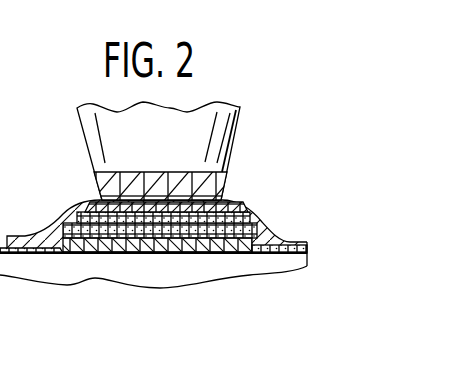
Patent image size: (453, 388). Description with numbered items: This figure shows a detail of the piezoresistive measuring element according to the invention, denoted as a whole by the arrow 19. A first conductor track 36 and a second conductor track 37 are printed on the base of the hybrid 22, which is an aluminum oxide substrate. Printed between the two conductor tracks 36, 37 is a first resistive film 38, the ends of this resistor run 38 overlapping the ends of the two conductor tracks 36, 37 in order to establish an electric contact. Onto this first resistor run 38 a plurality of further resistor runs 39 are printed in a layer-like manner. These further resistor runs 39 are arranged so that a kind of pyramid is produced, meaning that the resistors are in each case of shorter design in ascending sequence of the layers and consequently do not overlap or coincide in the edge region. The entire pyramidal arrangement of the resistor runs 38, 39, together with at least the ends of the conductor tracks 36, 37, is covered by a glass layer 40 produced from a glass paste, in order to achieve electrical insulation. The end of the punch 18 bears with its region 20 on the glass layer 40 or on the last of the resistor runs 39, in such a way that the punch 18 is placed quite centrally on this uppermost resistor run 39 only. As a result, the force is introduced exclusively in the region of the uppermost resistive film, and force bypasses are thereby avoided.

The punch 18 is at (190, 150).
The chip mounting assembly 19 is at (290, 215).
The region of the punch end 20 is at (226, 181).
The hybrid 22 is at (112, 268).
The first conductor track 36 is at (292, 254).
The second conductor track 37 is at (27, 255).
The first resistive film 38 is at (186, 252).
The further resistor runs 39 is at (78, 214).
The glass layer 40 is at (247, 212).